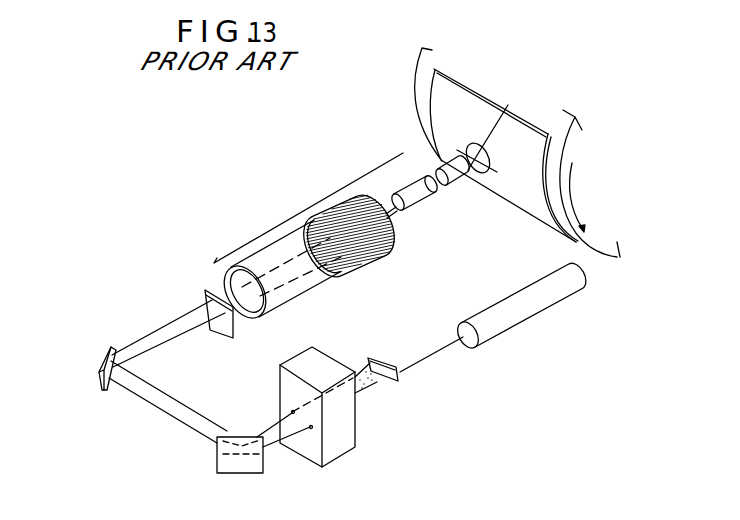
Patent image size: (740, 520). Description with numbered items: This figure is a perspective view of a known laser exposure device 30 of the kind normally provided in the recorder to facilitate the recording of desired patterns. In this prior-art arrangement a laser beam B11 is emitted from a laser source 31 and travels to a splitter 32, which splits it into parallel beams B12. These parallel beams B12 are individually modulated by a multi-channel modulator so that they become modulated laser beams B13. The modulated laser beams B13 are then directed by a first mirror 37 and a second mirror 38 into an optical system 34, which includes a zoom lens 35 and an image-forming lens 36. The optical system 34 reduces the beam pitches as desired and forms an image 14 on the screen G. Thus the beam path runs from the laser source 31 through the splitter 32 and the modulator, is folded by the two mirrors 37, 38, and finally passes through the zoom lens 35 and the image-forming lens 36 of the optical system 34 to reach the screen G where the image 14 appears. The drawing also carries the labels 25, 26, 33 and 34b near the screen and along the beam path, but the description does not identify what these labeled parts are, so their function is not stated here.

The image 14 is at (508, 105).
The drum 25 is at (413, 97).
The recording plate 26 is at (472, 102).
The screen G is at (459, 141).
The laser exposure device 30 is at (466, 378).
The laser source 31 is at (540, 300).
The splitter 32 is at (399, 372).
The beam combiner 33 is at (325, 362).
The optical system 34 is at (308, 208).
The entrance plate 34b is at (219, 314).
The zoom lens 35 is at (318, 274).
The image-forming lens 36 is at (449, 186).
The first mirror 37 is at (235, 473).
The second mirror 38 is at (100, 358).
The laser beam B11 is at (427, 357).
The parallel beams B12 is at (367, 397).
The modulated laser beams B13 is at (278, 444).